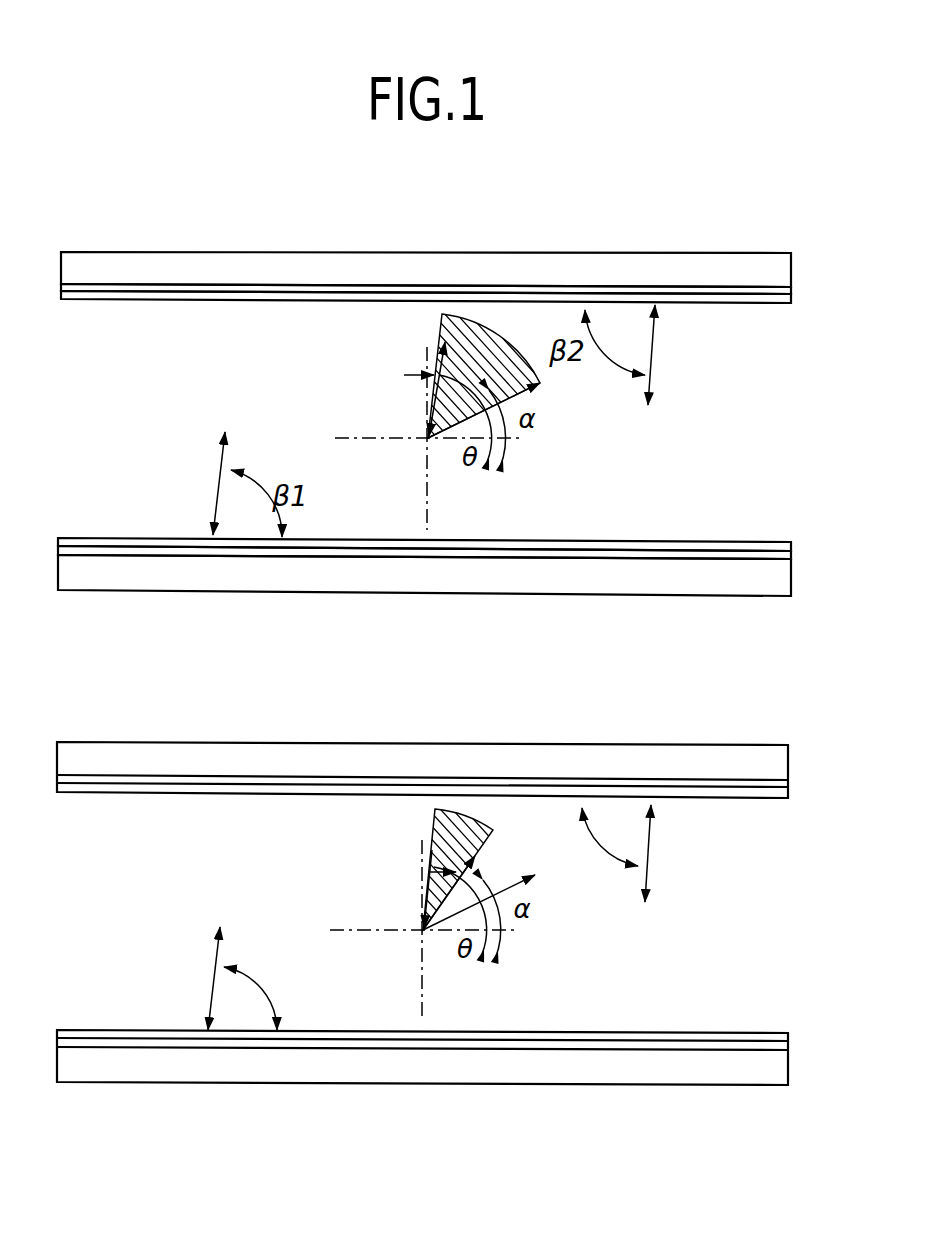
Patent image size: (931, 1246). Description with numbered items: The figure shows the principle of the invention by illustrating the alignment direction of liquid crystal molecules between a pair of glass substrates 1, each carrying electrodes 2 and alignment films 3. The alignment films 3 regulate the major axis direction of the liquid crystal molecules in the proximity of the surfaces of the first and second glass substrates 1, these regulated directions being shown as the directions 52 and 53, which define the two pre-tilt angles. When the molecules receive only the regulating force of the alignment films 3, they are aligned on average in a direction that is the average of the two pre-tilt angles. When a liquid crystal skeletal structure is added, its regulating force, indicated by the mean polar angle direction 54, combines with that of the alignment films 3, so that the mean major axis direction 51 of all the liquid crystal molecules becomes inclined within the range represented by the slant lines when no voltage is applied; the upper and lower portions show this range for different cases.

The glass substrates 1 is at (703, 266).
The electrodes 2 is at (651, 289).
The alignment films 3 is at (707, 305).
The mean major axis direction of all liquid crystal molecules 51 is at (478, 868).
The major axis direction of liquid crystal molecules near first substrate surface 52 is at (214, 982).
The major axis direction of liquid crystal molecules near second substrate surface 53 is at (647, 850).
The mean polar angle direction of liquid crystal skeletal structures 54 is at (516, 893).